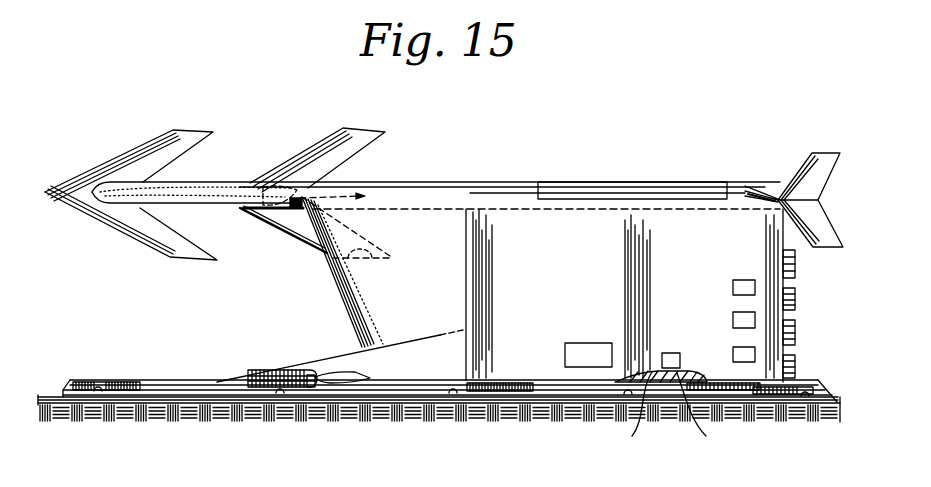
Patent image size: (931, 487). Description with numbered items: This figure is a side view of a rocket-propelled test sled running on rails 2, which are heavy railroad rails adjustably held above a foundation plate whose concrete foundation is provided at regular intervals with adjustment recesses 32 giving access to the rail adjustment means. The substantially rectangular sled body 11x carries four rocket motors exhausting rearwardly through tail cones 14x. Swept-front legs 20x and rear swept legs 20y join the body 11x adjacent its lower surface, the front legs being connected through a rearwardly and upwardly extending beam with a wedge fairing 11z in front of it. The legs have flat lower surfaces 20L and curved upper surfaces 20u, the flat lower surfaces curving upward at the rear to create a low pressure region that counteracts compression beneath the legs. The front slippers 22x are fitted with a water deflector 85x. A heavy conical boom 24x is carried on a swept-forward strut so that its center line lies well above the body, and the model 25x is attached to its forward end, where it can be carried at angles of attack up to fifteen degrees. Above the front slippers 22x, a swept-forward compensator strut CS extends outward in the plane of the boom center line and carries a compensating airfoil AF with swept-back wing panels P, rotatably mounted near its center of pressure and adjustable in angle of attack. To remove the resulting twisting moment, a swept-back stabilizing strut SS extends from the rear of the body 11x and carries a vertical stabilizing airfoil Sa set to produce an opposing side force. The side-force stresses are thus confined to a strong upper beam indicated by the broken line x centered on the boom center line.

The rails 2 is at (118, 390).
The sled body 11x is at (598, 291).
The wedge fairing 11z is at (333, 354).
The tail cones 14x is at (797, 262).
The lower surfaces of the legs 20L is at (622, 409).
The upper surfaces of the legs 20u is at (660, 371).
The swept-front legs 20x is at (350, 382).
The swept legs 20y is at (710, 411).
The front slippers 22x is at (273, 385).
The conical boom 24x is at (187, 193).
The model 25x is at (145, 162).
The adjustment recesses 32 is at (60, 398).
The water deflector 85x is at (257, 370).
The compensating airfoil AF is at (297, 153).
The compensator strut CS is at (345, 190).
The swept-back wing panels P is at (357, 150).
The stabilizing strut SS is at (748, 190).
The vertical stabilizing airfoil Sa is at (815, 168).
The broken line x is at (565, 212).